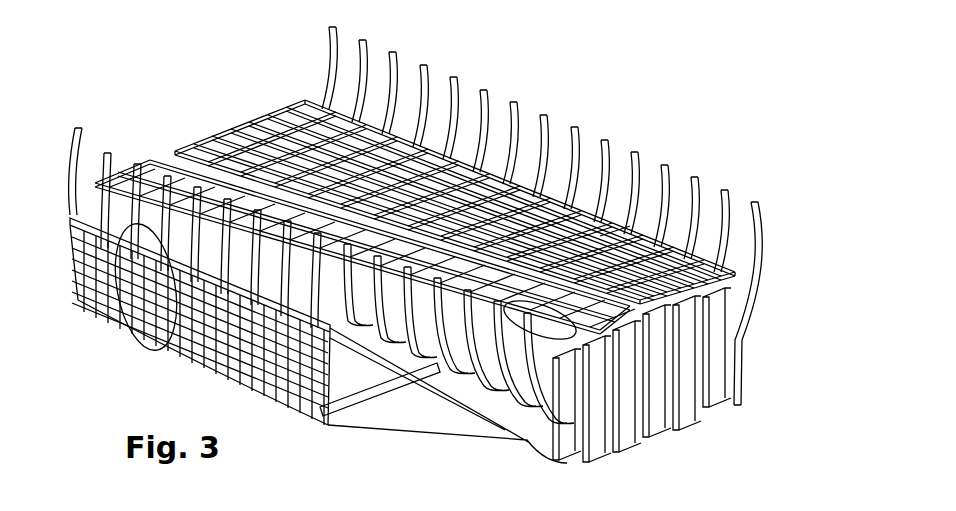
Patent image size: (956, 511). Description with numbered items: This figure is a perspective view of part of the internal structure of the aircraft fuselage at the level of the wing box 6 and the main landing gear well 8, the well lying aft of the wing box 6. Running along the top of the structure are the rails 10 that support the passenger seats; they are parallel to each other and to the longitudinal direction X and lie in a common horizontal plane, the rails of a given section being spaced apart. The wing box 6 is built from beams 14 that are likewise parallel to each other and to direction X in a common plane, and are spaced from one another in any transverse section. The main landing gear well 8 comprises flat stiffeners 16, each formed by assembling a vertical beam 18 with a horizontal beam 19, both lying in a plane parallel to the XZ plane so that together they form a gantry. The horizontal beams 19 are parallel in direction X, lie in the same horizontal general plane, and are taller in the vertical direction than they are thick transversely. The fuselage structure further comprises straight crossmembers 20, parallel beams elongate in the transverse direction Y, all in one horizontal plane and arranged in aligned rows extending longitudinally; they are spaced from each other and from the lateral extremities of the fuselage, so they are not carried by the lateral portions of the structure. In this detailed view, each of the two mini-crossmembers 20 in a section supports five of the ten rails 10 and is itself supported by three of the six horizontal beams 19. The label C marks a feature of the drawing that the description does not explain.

The wing box 6 is at (512, 62).
The main landing gear well 8 is at (684, 134).
The rails 10 is at (373, 350).
The beams 14 is at (87, 290).
The flat stiffeners 16 is at (510, 435).
The vertical beam 18 is at (700, 372).
The horizontal beam 19 is at (637, 318).
The crossmembers 20 is at (538, 458).
The center line C is at (610, 228).